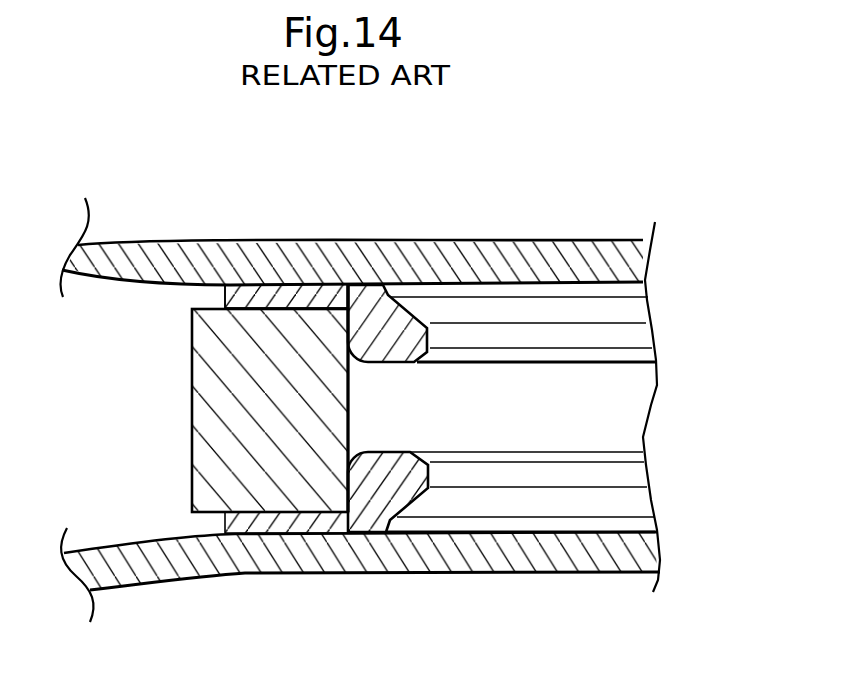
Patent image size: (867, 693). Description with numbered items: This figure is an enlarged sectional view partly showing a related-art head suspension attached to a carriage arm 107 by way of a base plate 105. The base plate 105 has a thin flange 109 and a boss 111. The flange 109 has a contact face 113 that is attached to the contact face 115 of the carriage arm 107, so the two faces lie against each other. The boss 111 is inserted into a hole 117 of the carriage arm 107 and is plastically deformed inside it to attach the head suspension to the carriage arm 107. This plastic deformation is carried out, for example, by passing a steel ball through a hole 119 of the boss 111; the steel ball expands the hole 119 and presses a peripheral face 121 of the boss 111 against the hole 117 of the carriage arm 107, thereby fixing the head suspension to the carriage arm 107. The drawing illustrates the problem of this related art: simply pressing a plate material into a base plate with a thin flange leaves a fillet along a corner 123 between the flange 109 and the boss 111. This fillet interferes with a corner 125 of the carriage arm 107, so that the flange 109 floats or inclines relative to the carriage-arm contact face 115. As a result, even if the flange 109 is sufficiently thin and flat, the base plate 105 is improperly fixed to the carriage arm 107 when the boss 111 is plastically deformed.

The base plate 105 is at (657, 308).
The carriage arm 107 is at (192, 434).
The flange 109 is at (224, 293).
The boss 111 is at (392, 364).
The contact face 113 is at (245, 306).
The contact face 115 is at (318, 308).
The hole 117 is at (382, 284).
The hole 119 is at (435, 337).
The peripheral face 121 is at (347, 338).
The corner 123 is at (315, 324).
The corner 125 is at (315, 324).